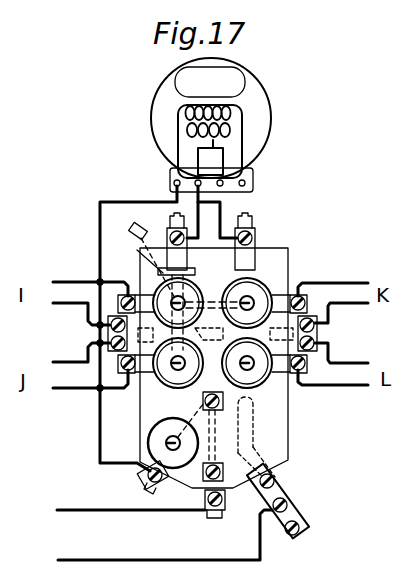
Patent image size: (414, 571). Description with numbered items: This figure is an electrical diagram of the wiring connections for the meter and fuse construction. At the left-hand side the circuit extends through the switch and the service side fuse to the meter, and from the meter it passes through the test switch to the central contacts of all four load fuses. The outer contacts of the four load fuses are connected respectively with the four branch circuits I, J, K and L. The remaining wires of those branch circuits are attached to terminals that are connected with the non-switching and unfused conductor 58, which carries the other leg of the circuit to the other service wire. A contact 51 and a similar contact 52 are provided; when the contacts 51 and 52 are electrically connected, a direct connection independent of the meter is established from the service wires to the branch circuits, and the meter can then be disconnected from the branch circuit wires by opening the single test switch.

The contact 51 is at (151, 455).
The contact 52 is at (153, 278).
The non-switching and unfused conductor 58 is at (243, 436).